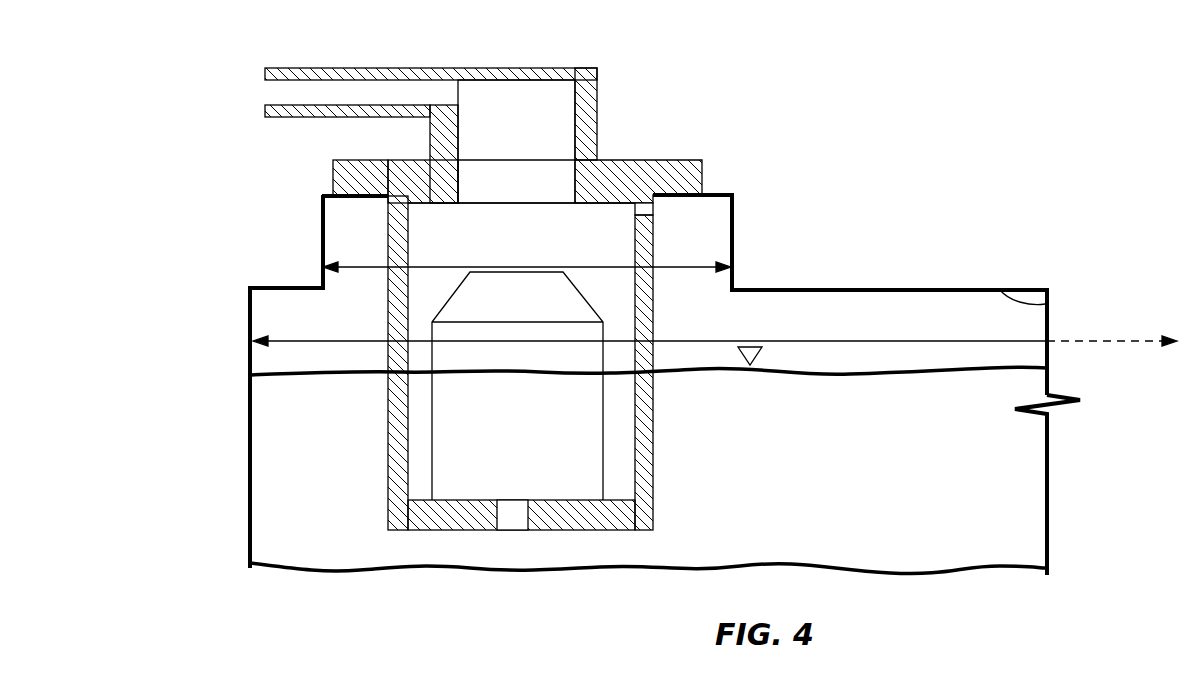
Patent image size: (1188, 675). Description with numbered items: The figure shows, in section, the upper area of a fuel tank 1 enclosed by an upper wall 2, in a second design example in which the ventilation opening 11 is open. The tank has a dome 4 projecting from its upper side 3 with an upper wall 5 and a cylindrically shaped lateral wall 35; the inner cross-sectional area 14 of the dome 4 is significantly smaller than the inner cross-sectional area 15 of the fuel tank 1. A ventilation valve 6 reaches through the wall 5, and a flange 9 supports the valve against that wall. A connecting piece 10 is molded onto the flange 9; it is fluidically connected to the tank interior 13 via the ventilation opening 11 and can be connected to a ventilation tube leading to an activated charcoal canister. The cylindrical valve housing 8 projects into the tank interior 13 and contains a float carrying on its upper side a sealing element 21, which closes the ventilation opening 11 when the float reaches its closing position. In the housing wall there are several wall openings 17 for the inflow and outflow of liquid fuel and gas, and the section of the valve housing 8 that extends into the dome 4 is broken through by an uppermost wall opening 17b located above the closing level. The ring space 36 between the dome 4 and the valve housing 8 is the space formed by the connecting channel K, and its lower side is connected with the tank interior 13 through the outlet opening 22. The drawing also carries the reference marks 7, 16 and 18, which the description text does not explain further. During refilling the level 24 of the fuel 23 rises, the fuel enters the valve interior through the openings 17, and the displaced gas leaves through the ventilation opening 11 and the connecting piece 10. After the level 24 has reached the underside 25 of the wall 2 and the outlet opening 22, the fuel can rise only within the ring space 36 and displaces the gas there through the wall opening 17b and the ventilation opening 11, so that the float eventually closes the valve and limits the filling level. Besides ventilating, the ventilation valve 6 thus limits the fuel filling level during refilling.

The fuel tank 1 is at (1026, 153).
The upper wall 2 is at (852, 288).
The upper side 3 is at (900, 290).
The dome 4 is at (736, 228).
The upper wall of the dome 5 is at (715, 193).
The ventilation valve 6 is at (655, 443).
The inlet chamber 7 is at (353, 290).
The valve housing 8 is at (395, 440).
The flange 9 is at (617, 170).
The connecting piece 10 is at (480, 68).
The ventilation opening 11 is at (520, 185).
The tank interior 13 is at (993, 489).
The inner cross-sectional area of the dome 14 is at (362, 265).
The inner cross-sectional area of the fuel tank 15 is at (915, 310).
The inlet 16 is at (246, 318).
The wall openings 17 is at (510, 518).
The uppermost wall opening 17b is at (645, 205).
The cylinder bottom 18 is at (597, 520).
The sealing element 21 is at (510, 298).
The outlet opening 22 is at (694, 310).
The fuel 23 is at (907, 512).
The fuel level 24 is at (313, 378).
The underside of the wall 25 is at (1050, 302).
The lateral wall 35 is at (322, 230).
The ring space 36 is at (690, 243).
The connecting channel K is at (375, 215).